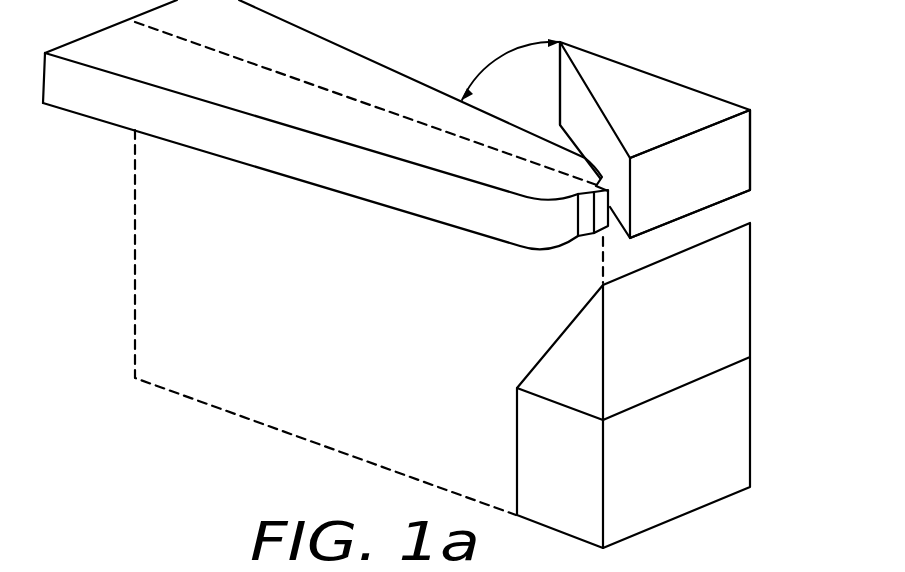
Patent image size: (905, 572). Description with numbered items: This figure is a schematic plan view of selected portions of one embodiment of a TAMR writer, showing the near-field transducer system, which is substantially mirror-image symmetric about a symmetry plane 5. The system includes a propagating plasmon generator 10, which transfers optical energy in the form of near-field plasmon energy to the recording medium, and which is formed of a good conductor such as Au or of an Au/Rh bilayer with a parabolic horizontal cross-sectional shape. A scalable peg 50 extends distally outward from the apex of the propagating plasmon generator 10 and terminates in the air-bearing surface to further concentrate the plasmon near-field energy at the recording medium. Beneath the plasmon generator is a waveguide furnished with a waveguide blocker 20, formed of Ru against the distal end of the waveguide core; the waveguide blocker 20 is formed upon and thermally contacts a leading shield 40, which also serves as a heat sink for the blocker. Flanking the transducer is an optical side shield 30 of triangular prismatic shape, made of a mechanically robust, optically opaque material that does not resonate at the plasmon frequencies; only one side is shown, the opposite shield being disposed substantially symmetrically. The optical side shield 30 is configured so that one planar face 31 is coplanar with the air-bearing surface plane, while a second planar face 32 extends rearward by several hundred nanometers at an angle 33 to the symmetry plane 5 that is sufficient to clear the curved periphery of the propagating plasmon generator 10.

The symmetry plane 5 is at (158, 278).
The propagating plasmon generator 10 is at (417, 97).
The waveguide blocker 20 is at (735, 260).
The optical side shield 30 is at (707, 110).
The planar face 31 is at (733, 138).
The second planar face 32 is at (560, 86).
The angle 33 is at (508, 58).
The leading shield 40 is at (735, 387).
The peg 50 is at (588, 224).